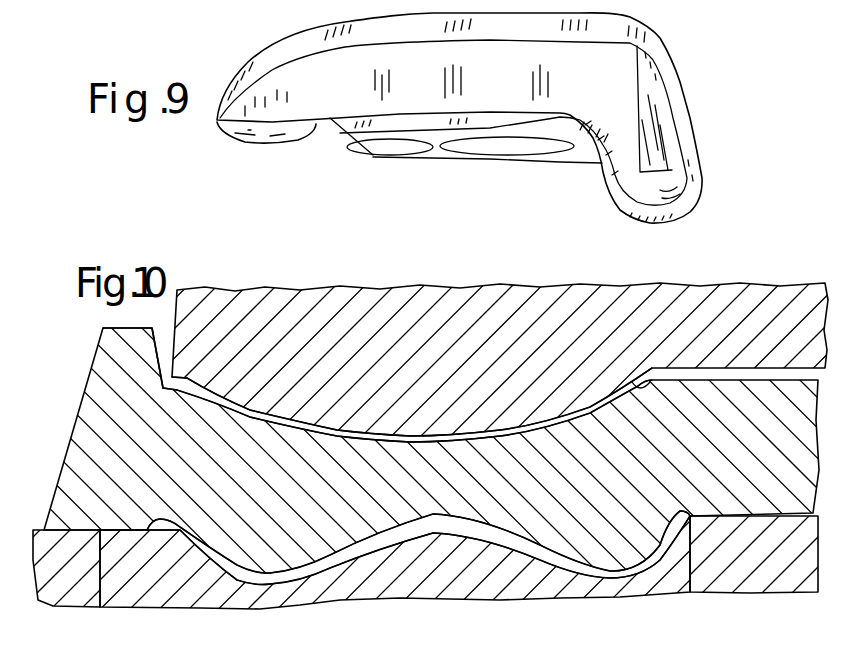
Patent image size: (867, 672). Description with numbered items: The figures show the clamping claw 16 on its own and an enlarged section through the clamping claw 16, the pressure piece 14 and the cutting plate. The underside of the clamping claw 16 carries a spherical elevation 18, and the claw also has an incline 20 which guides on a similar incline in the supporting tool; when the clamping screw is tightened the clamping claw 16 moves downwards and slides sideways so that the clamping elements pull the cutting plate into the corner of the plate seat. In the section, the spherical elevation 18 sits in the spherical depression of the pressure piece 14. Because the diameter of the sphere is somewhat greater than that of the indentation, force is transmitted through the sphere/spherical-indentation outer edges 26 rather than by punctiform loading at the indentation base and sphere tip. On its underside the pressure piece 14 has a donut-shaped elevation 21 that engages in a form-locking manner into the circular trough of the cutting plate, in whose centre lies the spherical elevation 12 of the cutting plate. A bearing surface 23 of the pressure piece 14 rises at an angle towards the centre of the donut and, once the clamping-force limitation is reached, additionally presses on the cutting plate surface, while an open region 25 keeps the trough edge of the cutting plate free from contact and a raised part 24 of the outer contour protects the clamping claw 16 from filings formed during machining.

In FIG. 10, the spherical elevation 12 is at (420, 537).
In FIG. 10, the pressure piece 14 is at (80, 470).
In FIG. 9, the clamping claw 16 is at (673, 70).
In FIG. 10, the clamping claw 16 is at (775, 296).
In FIG. 9, the spherical elevation 18 is at (250, 138).
In FIG. 10, the spherical elevation 18 is at (413, 433).
In FIG. 9, the incline 20 is at (603, 185).
In FIG. 10, the elevation 21 is at (202, 570).
In FIG. 10, the bearing surface 23 is at (110, 573).
In FIG. 10, the raised part 24 is at (100, 355).
In FIG. 10, the open region 25 is at (687, 517).
In FIG. 10, the sphere/spherical-indentation outer edges 26 is at (217, 403).